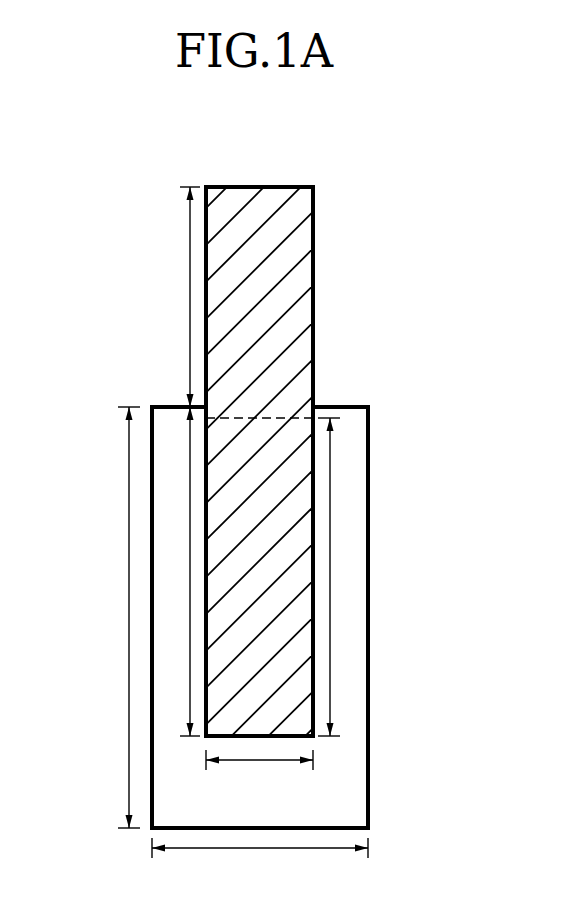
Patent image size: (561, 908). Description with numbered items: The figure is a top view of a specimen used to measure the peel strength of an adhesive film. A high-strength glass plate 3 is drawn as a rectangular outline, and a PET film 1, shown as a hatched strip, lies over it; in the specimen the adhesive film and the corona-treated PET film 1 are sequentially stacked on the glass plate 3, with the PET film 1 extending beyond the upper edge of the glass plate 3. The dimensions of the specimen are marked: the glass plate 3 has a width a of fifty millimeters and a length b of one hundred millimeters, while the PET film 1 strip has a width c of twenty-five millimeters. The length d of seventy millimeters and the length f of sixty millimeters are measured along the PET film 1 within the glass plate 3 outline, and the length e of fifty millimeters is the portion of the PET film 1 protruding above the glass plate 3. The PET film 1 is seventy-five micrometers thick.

The PET film 1 is at (303, 272).
The high-strength glass plate 3 is at (365, 480).
The dimension a is at (260, 859).
The dimension b is at (119, 617).
The dimension c is at (259, 771).
The dimension d is at (179, 571).
The dimension e is at (179, 297).
The dimension f is at (336, 577).